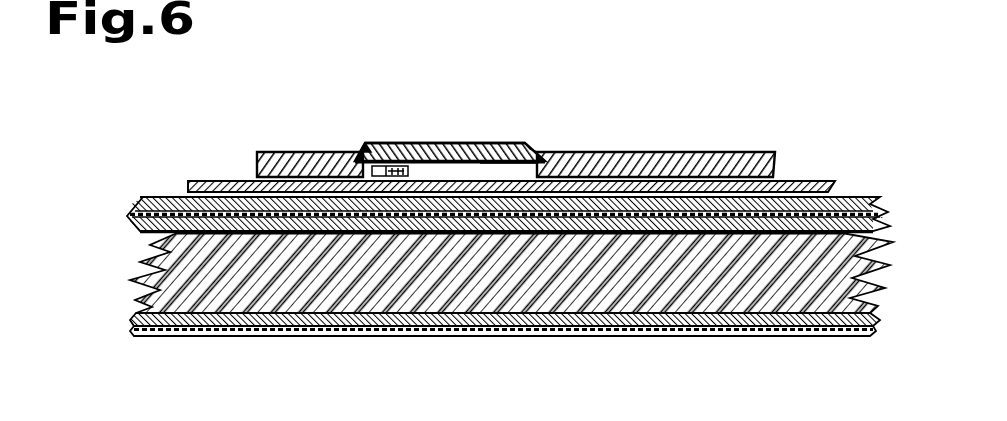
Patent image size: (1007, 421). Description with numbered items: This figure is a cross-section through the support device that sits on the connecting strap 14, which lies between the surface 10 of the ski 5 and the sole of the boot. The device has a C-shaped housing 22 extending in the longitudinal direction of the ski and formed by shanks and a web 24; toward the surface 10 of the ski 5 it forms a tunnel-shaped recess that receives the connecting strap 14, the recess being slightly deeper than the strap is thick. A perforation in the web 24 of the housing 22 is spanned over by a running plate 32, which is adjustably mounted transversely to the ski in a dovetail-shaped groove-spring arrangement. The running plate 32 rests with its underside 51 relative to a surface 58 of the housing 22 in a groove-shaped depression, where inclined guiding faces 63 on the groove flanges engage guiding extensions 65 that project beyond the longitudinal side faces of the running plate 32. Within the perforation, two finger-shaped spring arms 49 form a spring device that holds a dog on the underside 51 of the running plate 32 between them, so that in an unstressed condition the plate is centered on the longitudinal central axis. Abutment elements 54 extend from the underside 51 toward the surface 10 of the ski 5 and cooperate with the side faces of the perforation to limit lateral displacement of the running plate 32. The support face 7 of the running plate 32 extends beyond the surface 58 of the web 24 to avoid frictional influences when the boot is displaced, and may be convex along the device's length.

The ski 5 is at (195, 247).
The support face 7 is at (467, 140).
The surface 10 is at (848, 192).
The connecting strap 14 is at (810, 180).
The housing 22 is at (775, 130).
The web 24 is at (620, 152).
The running plate 32 is at (412, 142).
The spring arms 49 is at (448, 170).
The underside 51 is at (493, 167).
The abutment elements 54 is at (388, 173).
The surface 58 is at (283, 152).
The guiding faces 63 is at (528, 148).
The guiding extensions 65 is at (357, 152).